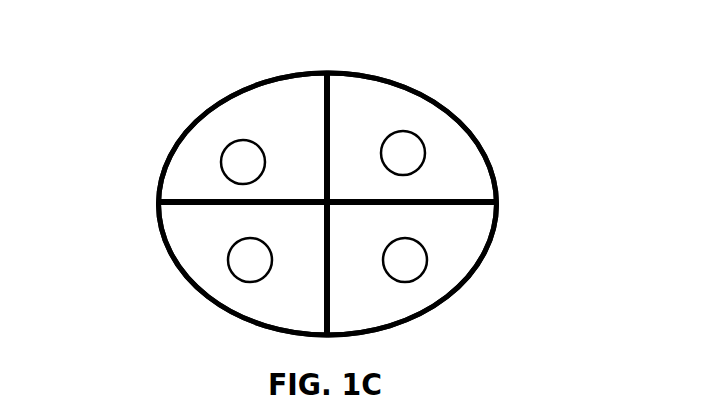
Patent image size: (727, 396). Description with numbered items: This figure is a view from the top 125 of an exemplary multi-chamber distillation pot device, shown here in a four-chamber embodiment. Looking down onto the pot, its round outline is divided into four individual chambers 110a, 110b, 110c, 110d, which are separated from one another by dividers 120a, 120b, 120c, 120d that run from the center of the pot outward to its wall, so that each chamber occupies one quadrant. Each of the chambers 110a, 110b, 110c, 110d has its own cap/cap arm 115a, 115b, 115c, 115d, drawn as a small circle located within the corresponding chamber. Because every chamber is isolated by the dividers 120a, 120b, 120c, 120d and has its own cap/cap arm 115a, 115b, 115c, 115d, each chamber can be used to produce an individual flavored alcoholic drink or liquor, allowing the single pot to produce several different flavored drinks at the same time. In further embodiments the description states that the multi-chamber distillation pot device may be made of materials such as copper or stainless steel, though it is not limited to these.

The top 125 is at (482, 262).
The chamber 110a is at (283, 113).
The chamber 110b is at (392, 109).
The chamber 110c is at (375, 298).
The chamber 110d is at (212, 272).
The divider 120a is at (332, 105).
The divider 120b is at (479, 199).
The divider 120c is at (323, 298).
The divider 120d is at (213, 196).
The cap/cap arm 115a is at (236, 156).
The cap/cap arm 115b is at (409, 149).
The cap/cap arm 115c is at (416, 257).
The cap/cap arm 115d is at (241, 258).